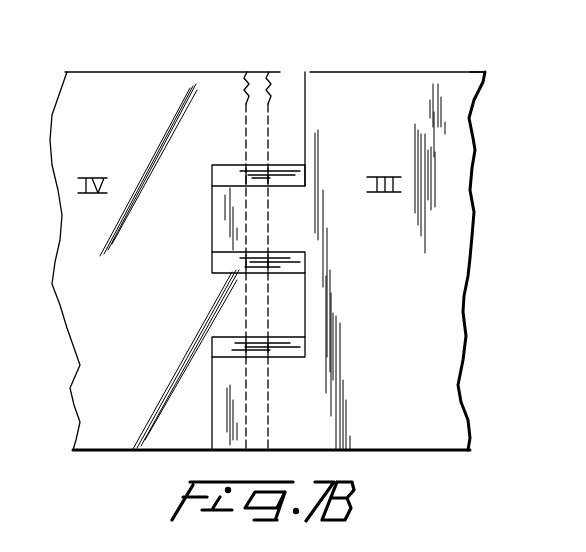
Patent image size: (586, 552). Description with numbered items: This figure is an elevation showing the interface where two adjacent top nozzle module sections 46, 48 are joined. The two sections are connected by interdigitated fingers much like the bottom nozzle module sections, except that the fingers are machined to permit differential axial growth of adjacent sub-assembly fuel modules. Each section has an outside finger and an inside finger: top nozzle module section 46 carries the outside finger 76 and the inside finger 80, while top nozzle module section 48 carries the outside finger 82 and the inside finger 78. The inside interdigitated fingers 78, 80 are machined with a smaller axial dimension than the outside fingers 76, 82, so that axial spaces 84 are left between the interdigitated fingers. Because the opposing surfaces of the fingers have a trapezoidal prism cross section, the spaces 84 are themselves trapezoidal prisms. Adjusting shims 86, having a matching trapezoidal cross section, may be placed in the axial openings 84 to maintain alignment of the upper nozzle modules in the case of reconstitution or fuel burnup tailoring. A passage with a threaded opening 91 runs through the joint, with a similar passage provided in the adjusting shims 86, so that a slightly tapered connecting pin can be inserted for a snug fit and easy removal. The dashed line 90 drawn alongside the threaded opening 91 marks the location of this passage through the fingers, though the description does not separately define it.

The top nozzle module section 46 is at (396, 441).
The top nozzle module section 48 is at (97, 444).
The outside finger 76 is at (292, 122).
The inside interdigitated finger 78 is at (218, 220).
The inside interdigitated finger 80 is at (293, 302).
The outside finger 82 is at (222, 394).
The axial spaces 84 is at (228, 185).
The adjusting shims 86 is at (293, 252).
The dashed line 90 is at (270, 80).
The threaded opening 91 is at (247, 78).